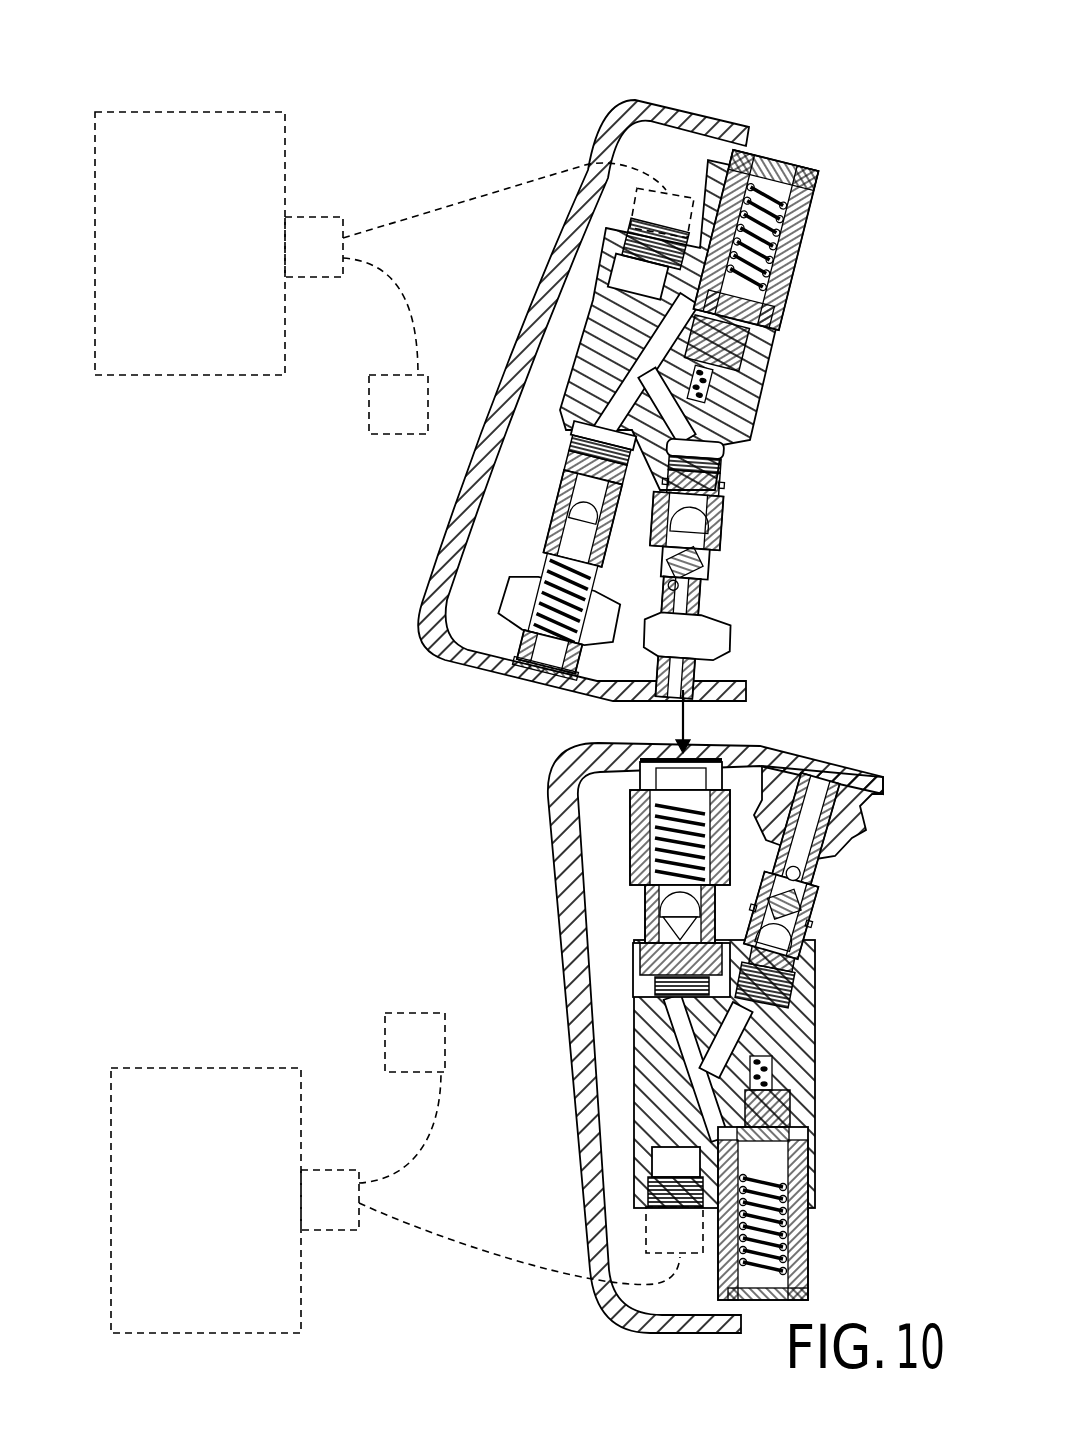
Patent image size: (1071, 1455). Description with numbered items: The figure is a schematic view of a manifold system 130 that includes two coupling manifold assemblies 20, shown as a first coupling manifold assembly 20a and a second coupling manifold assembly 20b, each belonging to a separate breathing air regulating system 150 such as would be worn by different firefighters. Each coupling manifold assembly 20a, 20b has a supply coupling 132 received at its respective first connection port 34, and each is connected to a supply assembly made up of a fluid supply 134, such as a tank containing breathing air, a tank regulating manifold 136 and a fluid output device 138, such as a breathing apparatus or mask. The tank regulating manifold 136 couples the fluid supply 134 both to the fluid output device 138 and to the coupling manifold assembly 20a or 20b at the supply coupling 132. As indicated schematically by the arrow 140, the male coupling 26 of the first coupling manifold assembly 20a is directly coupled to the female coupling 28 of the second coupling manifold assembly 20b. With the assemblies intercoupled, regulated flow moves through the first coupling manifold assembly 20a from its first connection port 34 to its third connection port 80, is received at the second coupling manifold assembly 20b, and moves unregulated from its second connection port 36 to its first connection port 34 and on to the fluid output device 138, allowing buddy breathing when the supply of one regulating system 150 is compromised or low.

The coupling manifold assembly 20 is at (720, 725).
The first coupling manifold assembly 20a is at (757, 422).
The second coupling manifold assembly 20b is at (840, 1075).
The male coupling 26 is at (702, 601).
The female coupling 28 is at (637, 863).
The first connection port 34 is at (618, 236).
The second connection port 36 is at (637, 973).
The third connection port 80 is at (720, 496).
The manifold system 130 is at (96, 68).
The supply coupling 132 is at (683, 186).
The fluid supply 134 is at (176, 378).
The tank regulating manifold 136 is at (313, 278).
The fluid output device 138 is at (388, 434).
The arrow 140 is at (700, 738).
The breathing air regulating system 150 is at (508, 100).